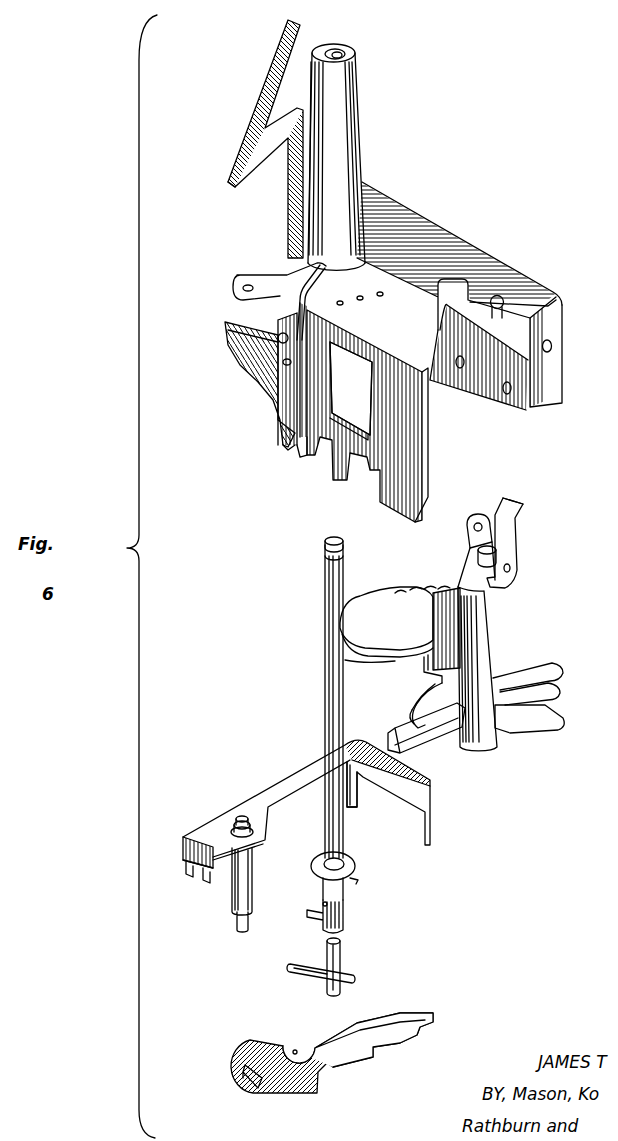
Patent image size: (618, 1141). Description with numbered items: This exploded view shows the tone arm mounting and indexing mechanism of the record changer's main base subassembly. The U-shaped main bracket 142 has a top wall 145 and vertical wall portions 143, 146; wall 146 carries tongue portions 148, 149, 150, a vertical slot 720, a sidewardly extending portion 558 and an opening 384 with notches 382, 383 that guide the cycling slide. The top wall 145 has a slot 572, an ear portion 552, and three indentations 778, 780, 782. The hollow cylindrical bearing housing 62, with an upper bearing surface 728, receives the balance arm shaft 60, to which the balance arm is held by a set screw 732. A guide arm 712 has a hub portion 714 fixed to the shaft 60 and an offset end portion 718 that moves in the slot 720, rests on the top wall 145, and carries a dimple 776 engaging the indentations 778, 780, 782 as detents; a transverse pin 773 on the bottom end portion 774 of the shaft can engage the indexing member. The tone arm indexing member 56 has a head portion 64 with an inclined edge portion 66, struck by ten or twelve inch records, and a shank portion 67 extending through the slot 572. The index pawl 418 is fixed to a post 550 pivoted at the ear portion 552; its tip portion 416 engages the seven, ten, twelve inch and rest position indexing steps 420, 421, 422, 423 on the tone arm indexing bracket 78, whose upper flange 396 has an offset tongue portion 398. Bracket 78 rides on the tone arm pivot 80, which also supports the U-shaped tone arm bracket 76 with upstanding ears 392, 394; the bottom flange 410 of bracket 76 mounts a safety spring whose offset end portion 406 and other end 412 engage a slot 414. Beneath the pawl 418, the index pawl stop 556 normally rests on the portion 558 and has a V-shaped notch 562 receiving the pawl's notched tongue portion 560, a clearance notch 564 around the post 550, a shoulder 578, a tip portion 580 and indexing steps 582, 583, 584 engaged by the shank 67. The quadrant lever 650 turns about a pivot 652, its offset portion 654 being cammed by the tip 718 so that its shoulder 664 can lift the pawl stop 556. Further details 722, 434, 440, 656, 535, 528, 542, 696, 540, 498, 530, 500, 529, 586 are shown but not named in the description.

The tone arm indexing member 56 is at (247, 139).
The upper bearing surface 728 is at (345, 50).
The bearing housing 62 is at (357, 125).
The inclined edge portion 66 is at (233, 150).
The head portion 64 is at (232, 187).
The shank portion 67 is at (290, 190).
The slot 572 is at (300, 240).
The ear portion 552 is at (240, 274).
The edge 722 is at (290, 264).
The pivot 652 is at (308, 300).
The shoulder 664 is at (278, 337).
The sidewardly extending portion 558 is at (230, 320).
The indentation 782 is at (383, 294).
The indentation 780 is at (362, 298).
The indentation 778 is at (342, 304).
The set screw 732 is at (432, 318).
The top wall 145 is at (440, 243).
The main bracket 142 is at (543, 284).
The flange 434 is at (550, 294).
The keyhole slot 440 is at (497, 314).
The vertical wall portion 143 is at (550, 322).
The quadrant lever 650 is at (242, 374).
The slot 720 is at (298, 353).
The notch 383 is at (330, 370).
The notch 382 is at (378, 397).
The offset portion 654 is at (275, 404).
The opening 384 is at (375, 418).
The vertical wall portion 146 is at (381, 416).
The notch 656 is at (286, 449).
The tongue portion 150 is at (300, 458).
The tongue portion 149 is at (337, 486).
The tongue portion 148 is at (379, 505).
The ear 392 is at (479, 514).
The offset tongue portion 398 is at (524, 502).
The upper flange 396 is at (463, 565).
The ear 394 is at (525, 541).
The twelve inch indexing step 422 is at (430, 587).
The ten inch indexing step 421 is at (418, 589).
The rest position indexing step 423 is at (443, 586).
The seven inch indexing step 420 is at (398, 598).
The tone arm indexing bracket 78 is at (400, 606).
The nut 535 is at (496, 618).
The tone arm pivot 80 is at (497, 687).
The spring arm 528 is at (532, 672).
The finger 542 is at (565, 672).
The edge 696 is at (375, 658).
The offset end portion 406 is at (424, 666).
The slot 414 is at (412, 686).
The finger 540 is at (558, 698).
The other end 412 is at (406, 710).
The spring plate 498 is at (552, 696).
The tab 530 is at (389, 736).
The plate edge 500 is at (536, 731).
The balance arm shaft 60 is at (324, 721).
The strip 529 is at (412, 742).
The bottom flange 410 is at (414, 736).
The tone arm bracket 76 is at (482, 751).
The index pawl 418 is at (320, 823).
The tab 586 is at (357, 810).
The tip portion 416 is at (433, 833).
The hub portion 714 is at (354, 875).
The guide arm 712 is at (357, 881).
The dimple 776 is at (322, 905).
The offset end portion 718 is at (301, 904).
The notched tongue portion 560 is at (197, 877).
The post 550 is at (235, 896).
The transverse pin 773 is at (310, 968).
The bottom end portion 774 is at (323, 965).
The tip portion 580 is at (430, 1013).
The clearance notch 564 is at (292, 1050).
The index pawl stop 556 is at (354, 1048).
The twelve inch indexing step 584 is at (437, 1022).
The ten inch indexing step 583 is at (416, 1036).
The seven inch indexing step 582 is at (392, 1046).
The V-shaped notch 562 is at (262, 1091).
The shoulder 578 is at (322, 1090).